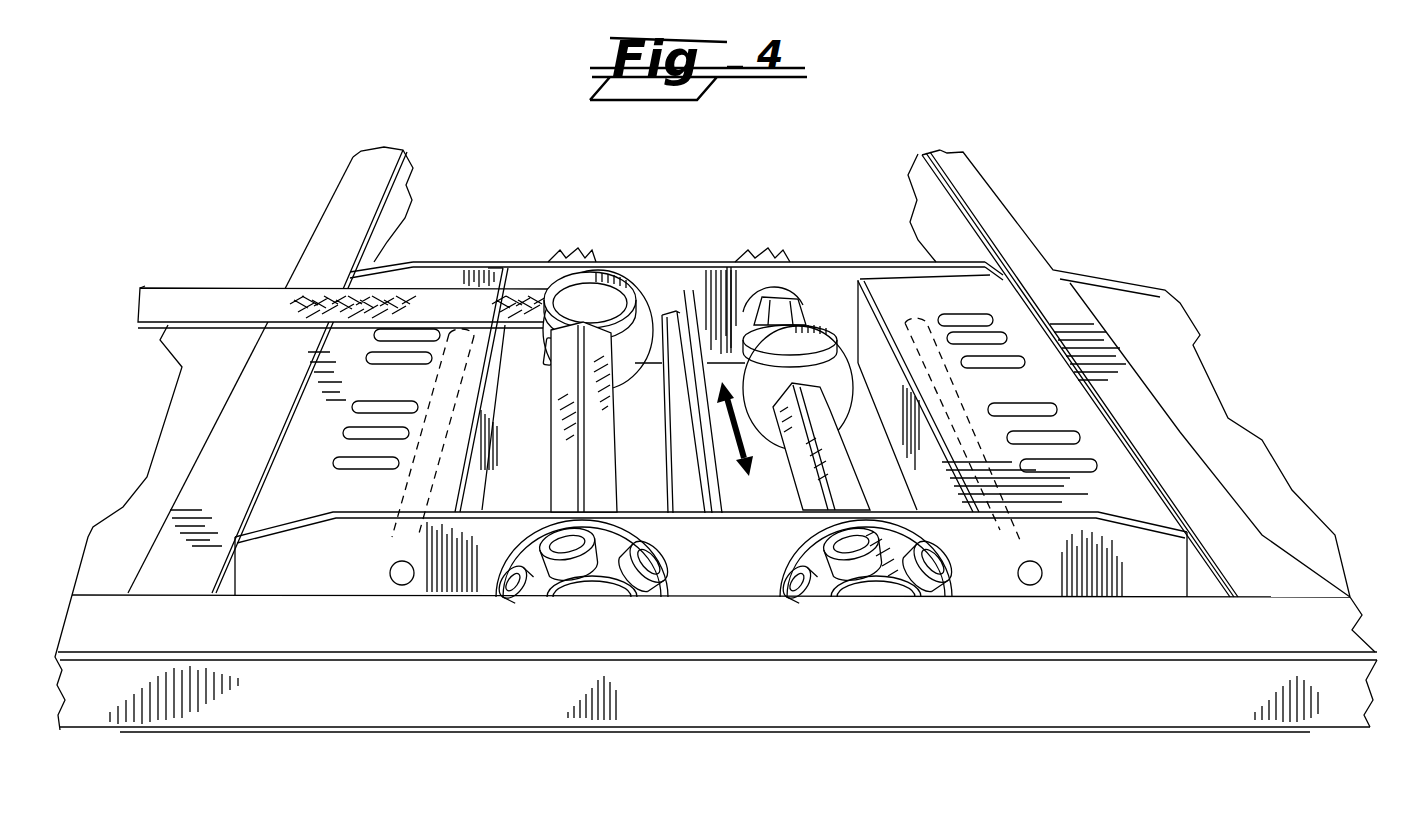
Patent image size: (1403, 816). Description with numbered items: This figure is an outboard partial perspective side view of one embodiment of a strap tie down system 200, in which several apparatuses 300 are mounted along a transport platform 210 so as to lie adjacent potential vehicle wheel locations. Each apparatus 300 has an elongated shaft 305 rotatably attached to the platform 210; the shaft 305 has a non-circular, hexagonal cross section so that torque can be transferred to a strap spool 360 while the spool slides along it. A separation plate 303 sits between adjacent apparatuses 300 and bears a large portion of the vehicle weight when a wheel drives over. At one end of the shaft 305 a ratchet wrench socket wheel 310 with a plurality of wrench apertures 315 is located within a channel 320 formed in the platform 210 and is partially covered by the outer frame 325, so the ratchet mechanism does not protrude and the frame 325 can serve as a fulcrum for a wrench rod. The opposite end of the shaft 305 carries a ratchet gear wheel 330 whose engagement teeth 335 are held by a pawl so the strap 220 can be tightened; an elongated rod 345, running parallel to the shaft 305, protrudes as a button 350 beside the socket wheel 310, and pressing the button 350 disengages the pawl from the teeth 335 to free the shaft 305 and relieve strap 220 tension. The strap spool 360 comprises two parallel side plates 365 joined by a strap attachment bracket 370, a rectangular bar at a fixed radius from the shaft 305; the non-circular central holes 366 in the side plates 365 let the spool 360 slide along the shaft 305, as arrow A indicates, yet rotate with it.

The system 200 is at (327, 72).
The platform 210 is at (1080, 322).
The strap 220 is at (240, 300).
The apparatus 300 is at (661, 369).
The separation plate 303 is at (712, 472).
The elongated shaft 305 is at (563, 443).
The ratchet wrench socket wheel 310 is at (726, 622).
The wrench apertures 315 is at (655, 560).
The channel 320 is at (1098, 582).
The outer frame 325 is at (398, 717).
The ratchet gear wheel 330 is at (563, 248).
The engagement teeth 335 is at (603, 263).
The elongated rod 345 is at (990, 455).
The button 350 is at (396, 585).
The strap spool 360 is at (754, 289).
The side plates 365 is at (830, 377).
The central holes 366 is at (658, 283).
The strap attachment bracket 370 is at (489, 268).